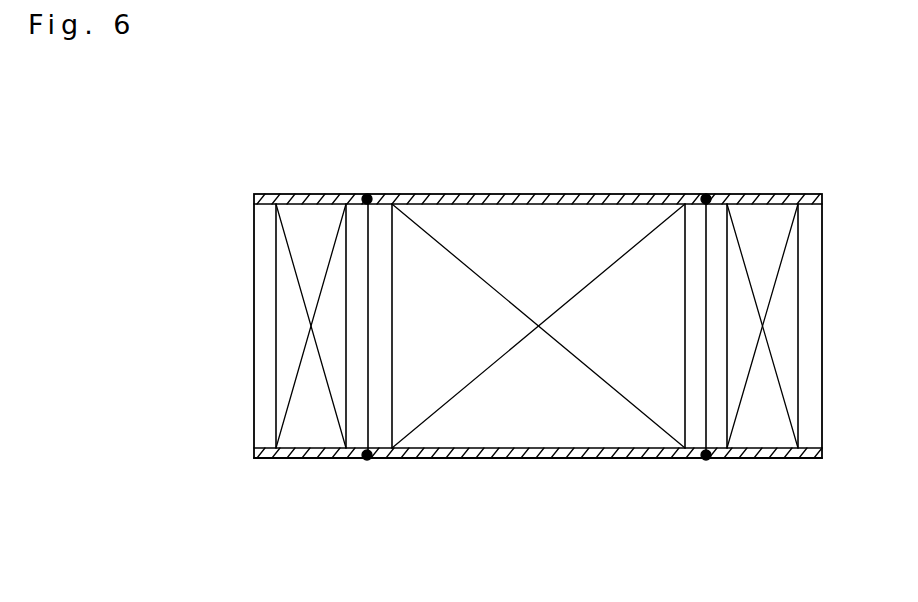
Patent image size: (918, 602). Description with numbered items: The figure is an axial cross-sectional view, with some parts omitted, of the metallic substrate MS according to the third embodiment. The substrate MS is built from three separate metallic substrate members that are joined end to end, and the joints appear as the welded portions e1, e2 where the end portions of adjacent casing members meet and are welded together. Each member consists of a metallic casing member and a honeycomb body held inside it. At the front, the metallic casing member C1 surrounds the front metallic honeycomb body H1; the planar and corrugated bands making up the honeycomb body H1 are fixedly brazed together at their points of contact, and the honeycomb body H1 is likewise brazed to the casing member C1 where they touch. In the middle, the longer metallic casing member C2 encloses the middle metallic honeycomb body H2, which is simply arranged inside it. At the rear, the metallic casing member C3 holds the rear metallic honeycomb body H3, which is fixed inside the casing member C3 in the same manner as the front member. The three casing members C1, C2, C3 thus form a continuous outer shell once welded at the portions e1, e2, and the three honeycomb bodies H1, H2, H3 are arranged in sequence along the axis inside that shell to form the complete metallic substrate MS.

The metallic substrate MS is at (436, 176).
The front metallic honeycomb body H1 is at (309, 217).
The middle metallic honeycomb body H2 is at (563, 218).
The rear metallic honeycomb body H3 is at (777, 215).
The welded portion e1 is at (366, 194).
The welded portion e2 is at (706, 194).
The metallic casing member C1 is at (300, 460).
The metallic casing member C2 is at (500, 460).
The metallic casing member C3 is at (765, 459).